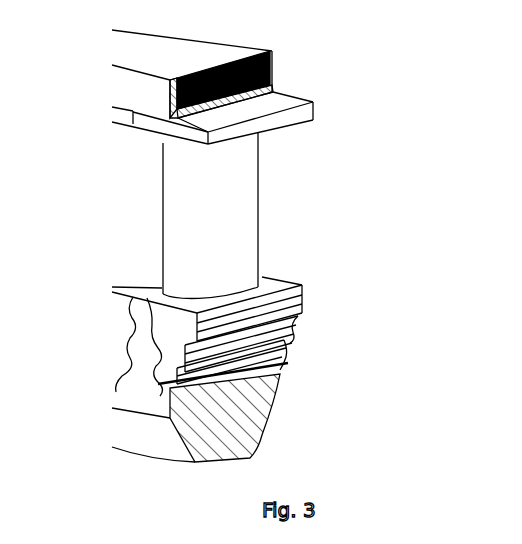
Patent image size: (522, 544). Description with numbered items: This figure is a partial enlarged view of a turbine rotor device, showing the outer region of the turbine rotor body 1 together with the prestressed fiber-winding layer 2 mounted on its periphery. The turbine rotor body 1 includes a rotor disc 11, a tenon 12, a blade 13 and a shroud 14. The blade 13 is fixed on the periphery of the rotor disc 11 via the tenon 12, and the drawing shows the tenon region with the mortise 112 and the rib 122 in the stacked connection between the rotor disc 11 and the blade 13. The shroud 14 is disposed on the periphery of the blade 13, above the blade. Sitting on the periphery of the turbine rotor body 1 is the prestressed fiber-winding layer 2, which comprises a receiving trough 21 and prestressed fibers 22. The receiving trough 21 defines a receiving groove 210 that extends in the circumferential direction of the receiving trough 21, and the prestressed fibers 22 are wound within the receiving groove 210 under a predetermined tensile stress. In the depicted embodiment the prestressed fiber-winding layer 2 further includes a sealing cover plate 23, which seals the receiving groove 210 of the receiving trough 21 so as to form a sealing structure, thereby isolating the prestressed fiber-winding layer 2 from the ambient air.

The turbine rotor body 1 is at (380, 197).
The rotor disc 11 is at (220, 427).
The mortise 112 is at (262, 372).
The tenon 12 is at (293, 330).
The rib 122 is at (302, 311).
The blade 13 is at (240, 243).
The shroud 14 is at (262, 131).
The prestressed fiber-winding layer 2 is at (369, 30).
The receiving trough 21 is at (304, 105).
The prestressed fibers 22 is at (272, 62).
The sealing cover plate 23 is at (243, 50).
The receiving groove 210 is at (218, 105).